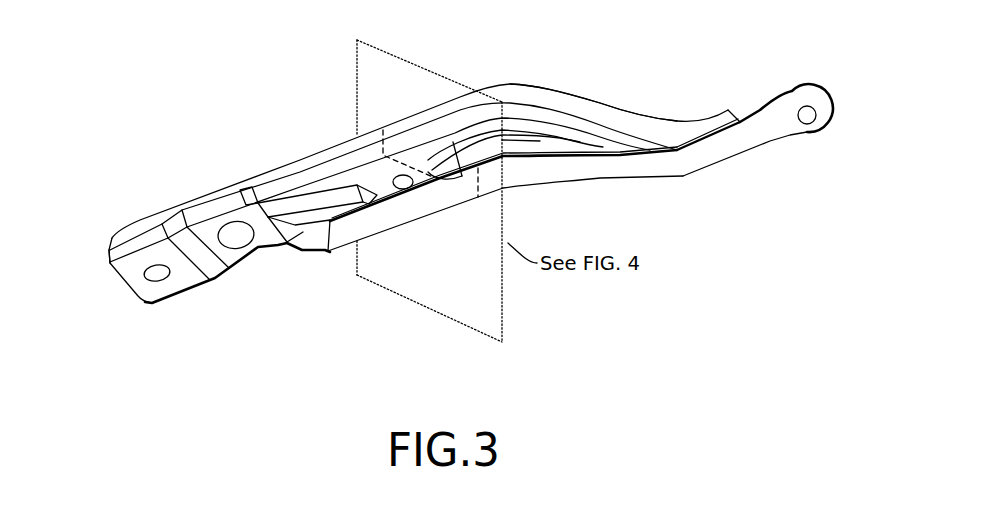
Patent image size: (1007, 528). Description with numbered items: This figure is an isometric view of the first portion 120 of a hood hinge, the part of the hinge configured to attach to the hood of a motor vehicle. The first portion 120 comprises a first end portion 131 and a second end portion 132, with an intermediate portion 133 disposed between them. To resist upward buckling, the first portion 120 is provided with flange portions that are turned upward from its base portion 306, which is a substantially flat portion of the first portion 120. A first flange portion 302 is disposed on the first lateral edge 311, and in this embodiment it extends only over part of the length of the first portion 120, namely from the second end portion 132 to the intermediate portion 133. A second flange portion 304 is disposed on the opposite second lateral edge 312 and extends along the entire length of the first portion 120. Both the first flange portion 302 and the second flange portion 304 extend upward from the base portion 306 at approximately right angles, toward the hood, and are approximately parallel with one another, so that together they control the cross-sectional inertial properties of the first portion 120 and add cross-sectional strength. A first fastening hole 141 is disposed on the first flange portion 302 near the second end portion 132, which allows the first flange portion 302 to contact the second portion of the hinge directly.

The first portion 120 is at (438, 175).
The first end portion 131 is at (198, 249).
The second end portion 132 is at (766, 94).
The intermediate portion 133 is at (590, 81).
The first fastening hole 141 is at (812, 117).
The first flange portion 302 is at (350, 240).
The second flange portion 304 is at (343, 141).
The base portion 306 is at (430, 173).
The first lateral edge 311 is at (142, 302).
The second lateral edge 312 is at (104, 261).